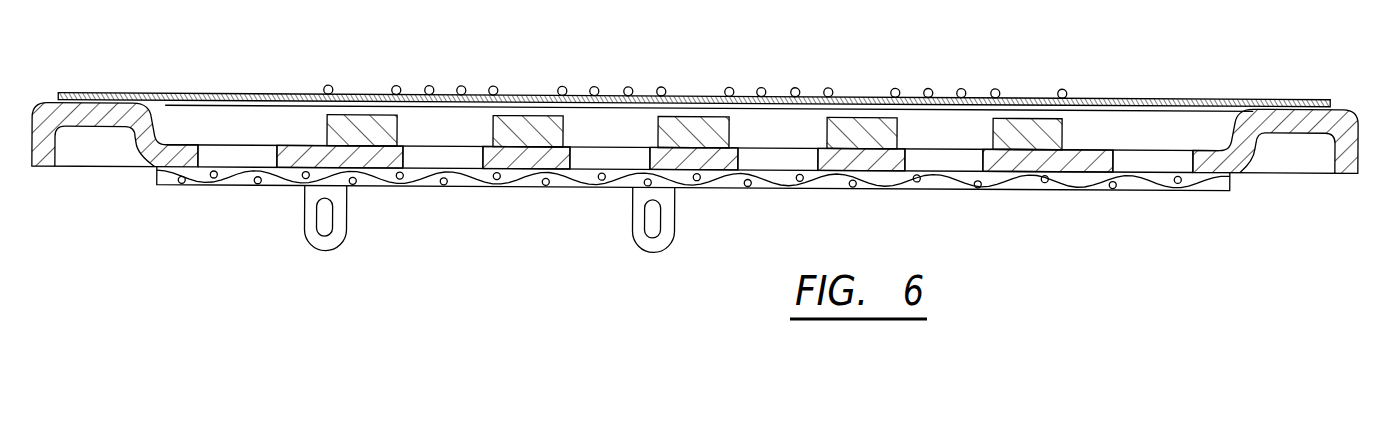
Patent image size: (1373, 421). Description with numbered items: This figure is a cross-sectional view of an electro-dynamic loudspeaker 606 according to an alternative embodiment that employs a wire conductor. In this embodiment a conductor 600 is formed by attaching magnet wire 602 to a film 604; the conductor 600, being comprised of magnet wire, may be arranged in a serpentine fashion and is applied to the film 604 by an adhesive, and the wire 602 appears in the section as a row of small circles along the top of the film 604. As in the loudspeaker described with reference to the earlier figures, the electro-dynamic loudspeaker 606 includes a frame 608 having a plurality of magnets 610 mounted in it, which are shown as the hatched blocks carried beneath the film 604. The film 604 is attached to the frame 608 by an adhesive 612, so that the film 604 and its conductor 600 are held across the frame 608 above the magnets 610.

The conductor 600 is at (750, 55).
The magnet wire 602 is at (996, 84).
The film 604 is at (1133, 94).
The electro-dynamic loudspeaker 606 is at (252, 52).
The frame 608 is at (138, 143).
The magnets 610 is at (493, 134).
The adhesive 612 is at (107, 100).